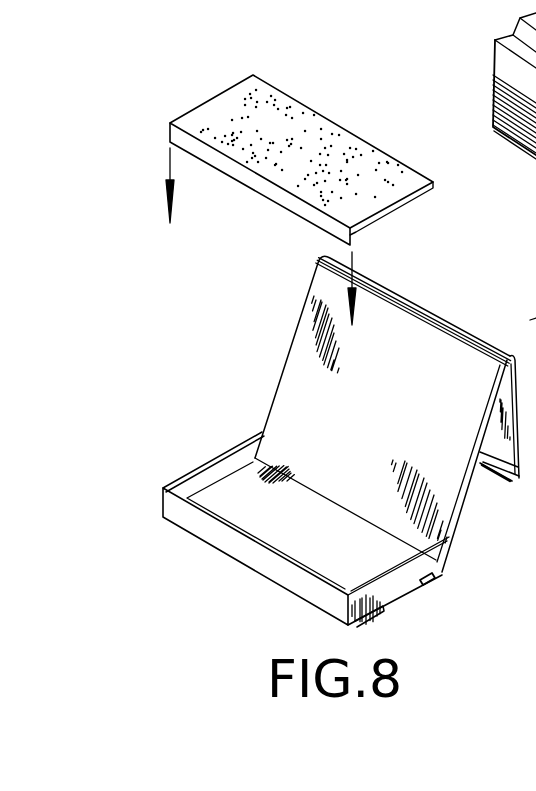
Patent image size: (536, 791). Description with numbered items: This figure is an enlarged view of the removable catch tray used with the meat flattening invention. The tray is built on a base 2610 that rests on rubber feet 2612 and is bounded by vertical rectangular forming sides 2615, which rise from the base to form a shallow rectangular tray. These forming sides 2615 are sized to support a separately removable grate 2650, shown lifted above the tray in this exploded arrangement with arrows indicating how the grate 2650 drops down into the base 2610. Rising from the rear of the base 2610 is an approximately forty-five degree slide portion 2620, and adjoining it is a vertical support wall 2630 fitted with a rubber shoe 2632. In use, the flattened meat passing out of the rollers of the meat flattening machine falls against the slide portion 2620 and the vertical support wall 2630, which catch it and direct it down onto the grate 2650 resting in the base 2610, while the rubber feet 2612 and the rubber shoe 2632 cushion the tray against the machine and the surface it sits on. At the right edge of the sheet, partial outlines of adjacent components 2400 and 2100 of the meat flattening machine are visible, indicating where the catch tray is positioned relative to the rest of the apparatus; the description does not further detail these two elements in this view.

The removable grate 2650 is at (325, 120).
The slide portion 2620 is at (298, 377).
The vertical rectangular forming sides 2615 is at (217, 455).
The base 2610 is at (325, 536).
The rubber feet 2612 is at (373, 608).
The vertical support wall 2630 is at (494, 484).
The rubber shoe 2632 is at (500, 470).
The housing 2400 is at (535, 196).
The assembly 2100 is at (519, 303).